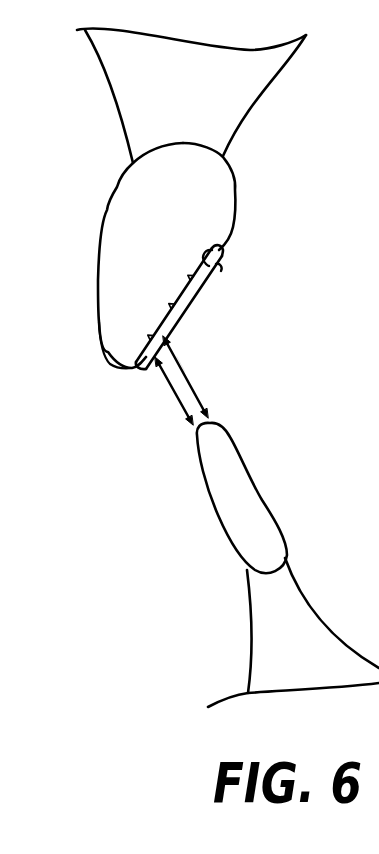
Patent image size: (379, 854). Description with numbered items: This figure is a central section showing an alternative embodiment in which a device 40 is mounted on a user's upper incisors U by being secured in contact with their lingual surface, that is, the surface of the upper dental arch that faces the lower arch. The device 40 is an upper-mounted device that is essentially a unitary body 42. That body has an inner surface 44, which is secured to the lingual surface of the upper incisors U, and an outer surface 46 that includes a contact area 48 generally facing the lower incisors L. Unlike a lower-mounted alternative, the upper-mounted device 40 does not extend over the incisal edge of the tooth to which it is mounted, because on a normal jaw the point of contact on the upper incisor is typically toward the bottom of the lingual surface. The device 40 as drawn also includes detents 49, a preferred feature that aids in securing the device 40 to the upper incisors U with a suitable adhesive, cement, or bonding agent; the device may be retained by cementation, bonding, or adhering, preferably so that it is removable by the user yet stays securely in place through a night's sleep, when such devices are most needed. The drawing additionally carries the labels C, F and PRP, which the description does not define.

The device 40 is at (167, 295).
The unitary body 42 is at (219, 268).
The inner surface 44 is at (208, 246).
The outer surface 46 is at (193, 298).
The contact area 48 is at (165, 335).
The detents 49 is at (178, 296).
The upper incisors U is at (142, 248).
The compressive force C is at (170, 391).
The force F is at (177, 356).
The PRP bone segment PRP is at (218, 436).
The lower incisors L is at (243, 547).